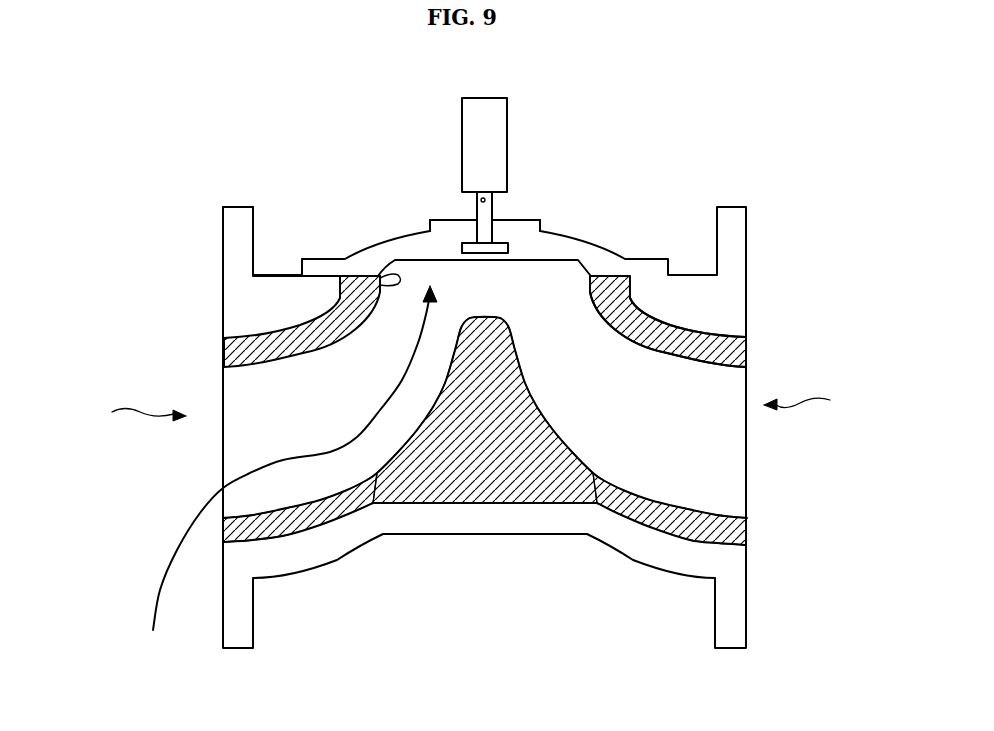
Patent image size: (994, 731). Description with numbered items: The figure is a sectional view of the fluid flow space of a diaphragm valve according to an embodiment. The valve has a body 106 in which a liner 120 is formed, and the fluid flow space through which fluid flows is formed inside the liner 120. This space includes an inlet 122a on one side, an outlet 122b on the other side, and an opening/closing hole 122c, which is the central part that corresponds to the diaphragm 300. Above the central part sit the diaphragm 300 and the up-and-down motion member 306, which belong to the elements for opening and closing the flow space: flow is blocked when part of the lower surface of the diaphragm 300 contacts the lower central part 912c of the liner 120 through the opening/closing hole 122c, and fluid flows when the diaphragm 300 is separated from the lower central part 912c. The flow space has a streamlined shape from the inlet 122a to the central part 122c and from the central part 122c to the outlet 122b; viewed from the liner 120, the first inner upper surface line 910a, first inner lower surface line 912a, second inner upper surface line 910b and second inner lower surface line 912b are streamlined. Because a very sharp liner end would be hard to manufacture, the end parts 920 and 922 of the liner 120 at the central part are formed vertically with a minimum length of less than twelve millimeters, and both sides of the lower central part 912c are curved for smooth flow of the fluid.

The body 106 is at (237, 209).
The liner 120 is at (240, 350).
The inlet 122a is at (109, 405).
The outlet 122b is at (839, 401).
The opening/closing hole 122c is at (282, 478).
The diaphragm 300 is at (555, 242).
The up-and-down motion member 306 is at (499, 126).
The first inner upper surface line 910a is at (300, 326).
The second inner upper surface line 910b is at (680, 348).
The first inner lower surface line 912a is at (318, 505).
The second inner lower surface line 912b is at (639, 528).
The lower central part 912c is at (482, 323).
The end part of the liner 920 is at (382, 280).
The end part of the liner 922 is at (590, 270).